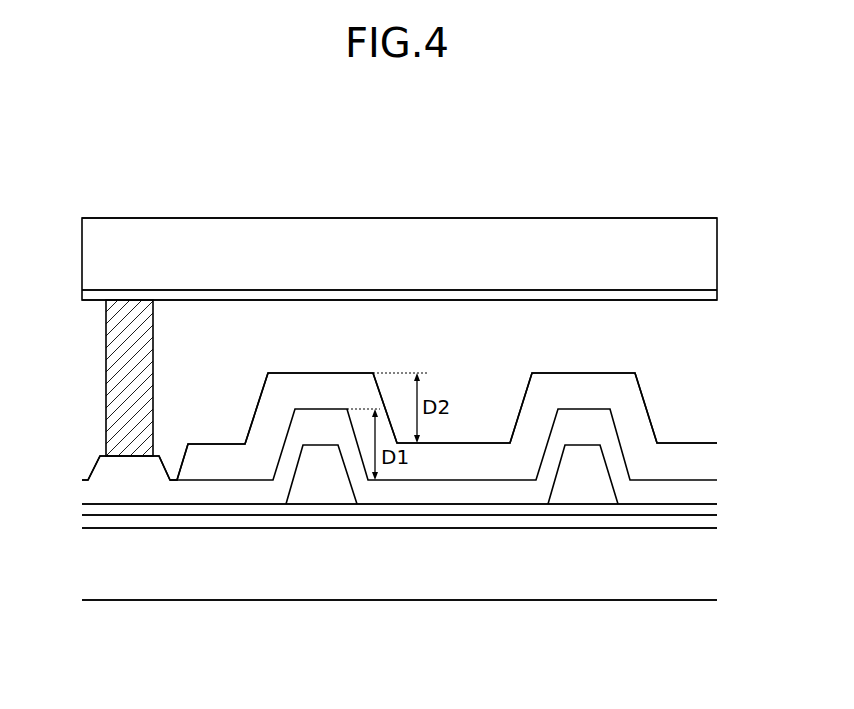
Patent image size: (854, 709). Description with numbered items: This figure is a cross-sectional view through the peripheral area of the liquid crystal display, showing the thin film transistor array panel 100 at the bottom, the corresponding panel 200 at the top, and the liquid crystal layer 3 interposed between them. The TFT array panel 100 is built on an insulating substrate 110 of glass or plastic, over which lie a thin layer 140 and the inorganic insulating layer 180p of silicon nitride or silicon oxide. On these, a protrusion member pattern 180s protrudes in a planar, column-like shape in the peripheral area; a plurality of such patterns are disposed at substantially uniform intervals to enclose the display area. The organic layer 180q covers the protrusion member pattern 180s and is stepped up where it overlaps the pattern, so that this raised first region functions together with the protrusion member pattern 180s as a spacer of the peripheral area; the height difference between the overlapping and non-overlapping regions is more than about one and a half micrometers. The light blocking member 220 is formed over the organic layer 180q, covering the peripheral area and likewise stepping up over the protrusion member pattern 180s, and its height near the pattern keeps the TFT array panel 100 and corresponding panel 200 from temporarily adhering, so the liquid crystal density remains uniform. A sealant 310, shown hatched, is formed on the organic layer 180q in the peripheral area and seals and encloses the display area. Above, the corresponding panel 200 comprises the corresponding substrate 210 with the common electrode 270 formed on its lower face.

The thin film transistor array panel 100 is at (718, 443).
The insulating substrate 110 is at (587, 577).
The insulating layer 140 is at (657, 518).
The inorganic insulating layer 180p is at (498, 510).
The organic layer 180q is at (241, 492).
The protrusion member pattern 180s is at (320, 488).
The corresponding panel 200 is at (718, 218).
The corresponding substrate 210 is at (454, 238).
The light blocking member 220 is at (423, 462).
The common electrode 270 is at (534, 296).
The liquid crystal layer 3 is at (718, 443).
The sealant 310 is at (120, 365).